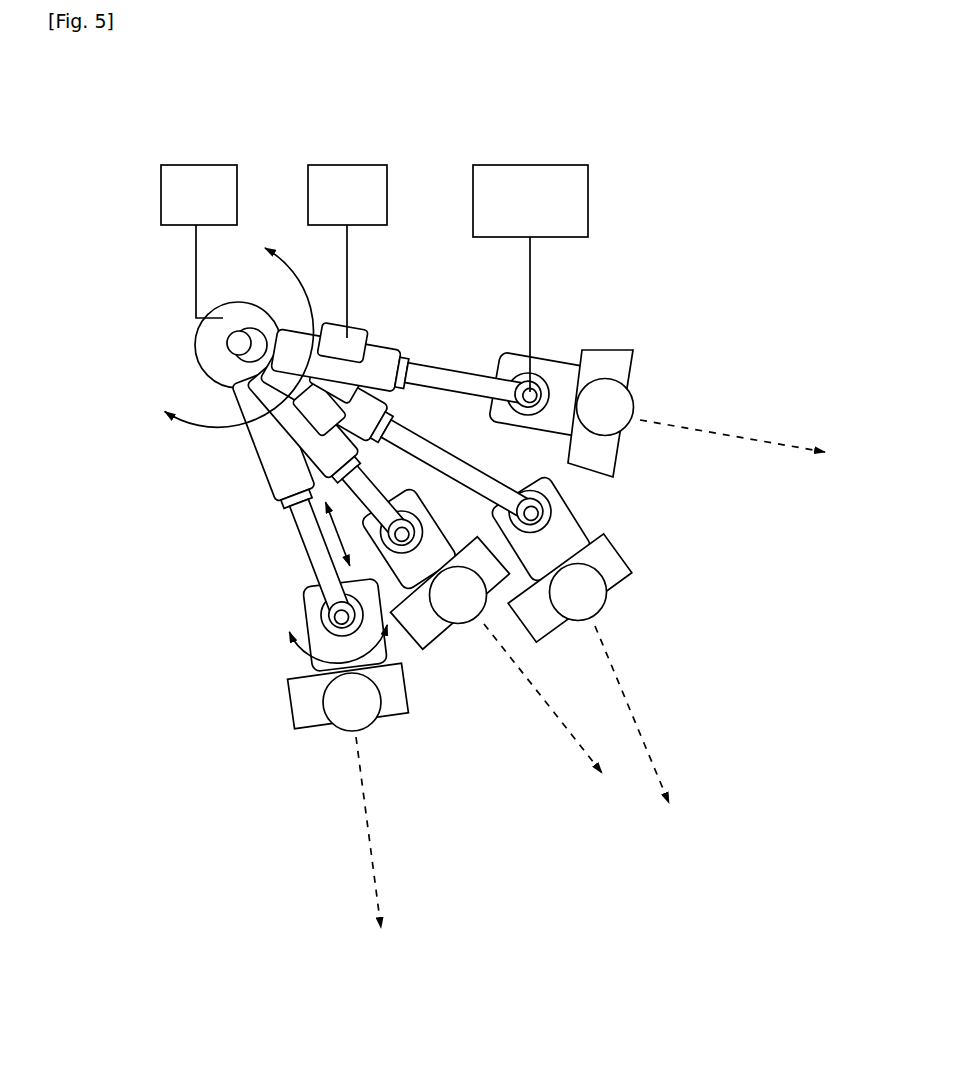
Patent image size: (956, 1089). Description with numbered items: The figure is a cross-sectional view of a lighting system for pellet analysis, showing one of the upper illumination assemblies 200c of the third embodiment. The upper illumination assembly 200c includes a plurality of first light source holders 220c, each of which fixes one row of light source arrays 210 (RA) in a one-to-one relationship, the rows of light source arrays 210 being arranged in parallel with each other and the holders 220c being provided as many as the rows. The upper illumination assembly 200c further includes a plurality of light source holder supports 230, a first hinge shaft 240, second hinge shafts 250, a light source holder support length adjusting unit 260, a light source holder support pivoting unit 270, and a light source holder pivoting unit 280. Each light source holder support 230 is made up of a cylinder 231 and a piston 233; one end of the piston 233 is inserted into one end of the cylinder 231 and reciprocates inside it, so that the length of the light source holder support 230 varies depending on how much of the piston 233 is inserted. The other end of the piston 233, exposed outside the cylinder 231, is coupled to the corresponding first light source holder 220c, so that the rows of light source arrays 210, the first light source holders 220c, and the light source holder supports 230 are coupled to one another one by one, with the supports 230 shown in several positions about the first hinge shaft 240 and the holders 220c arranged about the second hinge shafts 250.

The upper illumination assembly 200c is at (727, 183).
The robot arm (RA) 210 is at (357, 713).
The first light source holder 220c is at (293, 720).
The light source holder support 230 is at (113, 448).
The cylinder 231 is at (259, 453).
The piston 233 is at (306, 537).
The first hinge shaft 240 is at (233, 343).
The second hinge shaft 250 is at (322, 614).
The light source holder support length adjusting unit 260 is at (346, 165).
The light source holder support pivoting unit 270 is at (199, 165).
The light source holder pivoting unit 280 is at (528, 165).